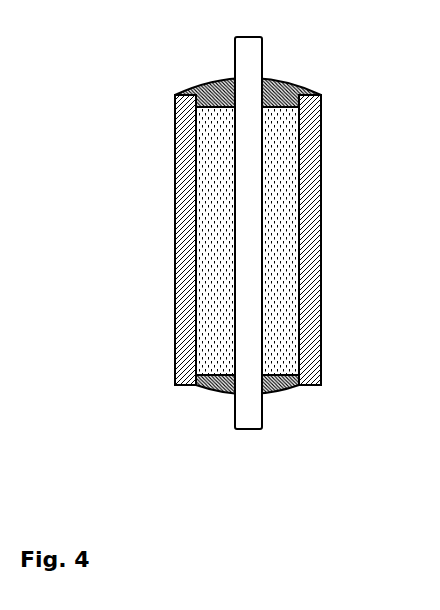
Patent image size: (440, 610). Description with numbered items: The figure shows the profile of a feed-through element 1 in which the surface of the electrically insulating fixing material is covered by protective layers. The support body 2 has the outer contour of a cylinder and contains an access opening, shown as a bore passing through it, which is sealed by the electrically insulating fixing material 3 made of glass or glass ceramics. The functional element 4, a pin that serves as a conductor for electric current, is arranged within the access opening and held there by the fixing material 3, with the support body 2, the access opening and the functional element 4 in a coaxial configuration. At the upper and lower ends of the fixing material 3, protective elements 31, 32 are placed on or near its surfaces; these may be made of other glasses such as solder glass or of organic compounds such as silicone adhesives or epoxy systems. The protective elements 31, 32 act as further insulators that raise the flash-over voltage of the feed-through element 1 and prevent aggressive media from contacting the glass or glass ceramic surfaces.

The feed-through element 1 is at (246, 271).
The support body 2 is at (322, 302).
The electrically insulating fixing material 3 is at (290, 327).
The protective element 31 is at (285, 80).
The protective element 32 is at (264, 395).
The functional element 4 is at (237, 430).